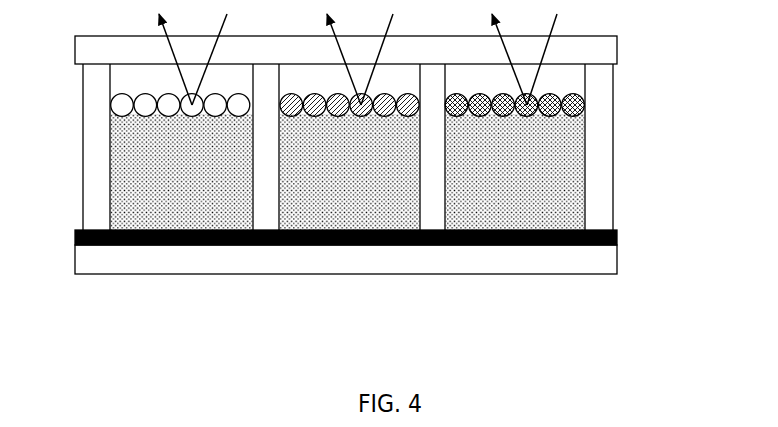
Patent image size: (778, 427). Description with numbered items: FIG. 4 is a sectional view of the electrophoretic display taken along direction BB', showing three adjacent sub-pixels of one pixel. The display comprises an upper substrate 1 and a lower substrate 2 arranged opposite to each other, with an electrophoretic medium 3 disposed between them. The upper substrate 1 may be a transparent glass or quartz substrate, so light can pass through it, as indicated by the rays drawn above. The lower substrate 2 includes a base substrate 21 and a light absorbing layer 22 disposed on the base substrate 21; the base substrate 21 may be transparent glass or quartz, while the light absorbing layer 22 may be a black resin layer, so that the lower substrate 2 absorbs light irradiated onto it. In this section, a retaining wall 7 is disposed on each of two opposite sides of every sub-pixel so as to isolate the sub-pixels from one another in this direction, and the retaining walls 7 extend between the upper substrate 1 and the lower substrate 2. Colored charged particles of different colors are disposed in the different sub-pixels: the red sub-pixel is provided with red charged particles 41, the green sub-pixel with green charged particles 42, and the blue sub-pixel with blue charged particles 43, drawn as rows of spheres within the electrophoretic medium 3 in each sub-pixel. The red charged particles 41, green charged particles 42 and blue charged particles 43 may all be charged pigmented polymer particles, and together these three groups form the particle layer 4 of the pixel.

The upper substrate 1 is at (592, 53).
The retaining wall 7 is at (602, 110).
The electrophoretic medium 3 is at (578, 162).
The light absorbing layer 22 is at (617, 237).
The base substrate 21 is at (598, 262).
The lower substrate 2 is at (390, 251).
The red charged particles 41 is at (123, 108).
The green charged particles 42 is at (292, 108).
The blue charged particles 43 is at (514, 208).
The particle layer 4 is at (348, 233).